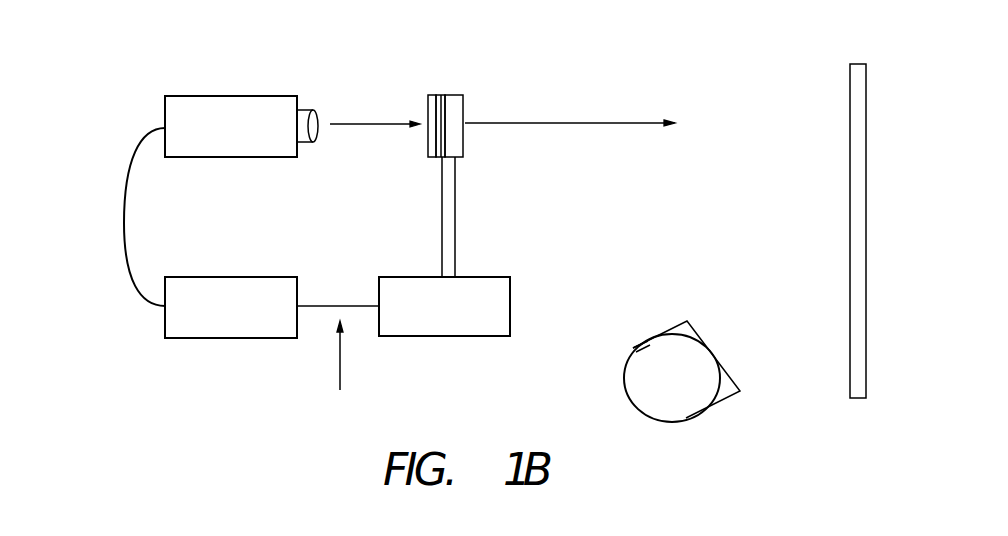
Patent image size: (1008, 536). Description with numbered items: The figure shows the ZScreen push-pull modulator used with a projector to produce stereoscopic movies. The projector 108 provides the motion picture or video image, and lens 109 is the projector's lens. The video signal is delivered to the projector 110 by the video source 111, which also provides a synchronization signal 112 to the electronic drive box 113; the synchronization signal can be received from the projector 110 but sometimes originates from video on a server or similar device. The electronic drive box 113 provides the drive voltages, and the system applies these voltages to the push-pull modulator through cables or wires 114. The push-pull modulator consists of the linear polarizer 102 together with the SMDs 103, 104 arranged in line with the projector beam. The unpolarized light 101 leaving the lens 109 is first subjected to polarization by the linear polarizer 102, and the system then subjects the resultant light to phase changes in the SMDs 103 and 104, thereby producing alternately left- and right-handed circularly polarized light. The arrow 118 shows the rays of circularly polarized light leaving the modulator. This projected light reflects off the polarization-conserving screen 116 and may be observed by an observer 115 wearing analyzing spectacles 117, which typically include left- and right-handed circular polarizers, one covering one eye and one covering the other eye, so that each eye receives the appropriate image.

The unpolarized light 101 is at (378, 124).
The linear polarizer 102 is at (431, 93).
The SMD 103 is at (443, 93).
The SMD 104 is at (465, 93).
The projector 108 is at (231, 96).
The lens 109 is at (320, 98).
The projector 110 is at (124, 218).
The video source 111 is at (230, 277).
The synchronization signal 112 is at (337, 369).
The electronic drive box 113 is at (482, 277).
The cables or wires 114 is at (455, 216).
The observer 115 is at (628, 408).
The polarization-conserving screen 116 is at (850, 104).
The analyzing spectacles 117 is at (705, 325).
The arrow 118 is at (618, 123).